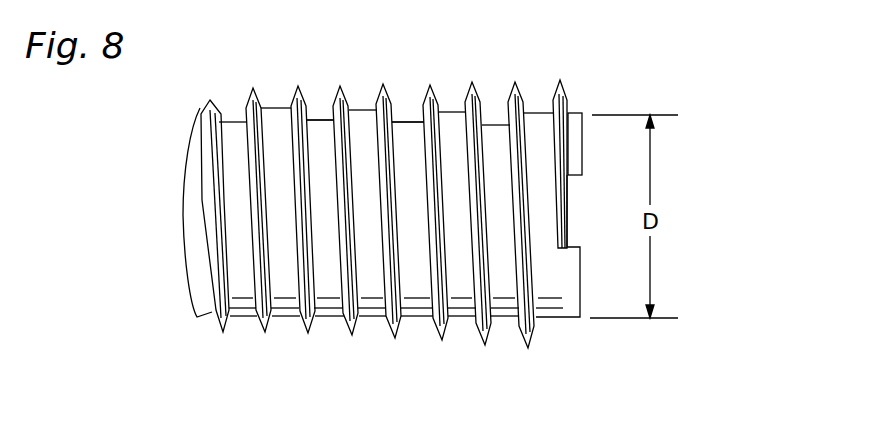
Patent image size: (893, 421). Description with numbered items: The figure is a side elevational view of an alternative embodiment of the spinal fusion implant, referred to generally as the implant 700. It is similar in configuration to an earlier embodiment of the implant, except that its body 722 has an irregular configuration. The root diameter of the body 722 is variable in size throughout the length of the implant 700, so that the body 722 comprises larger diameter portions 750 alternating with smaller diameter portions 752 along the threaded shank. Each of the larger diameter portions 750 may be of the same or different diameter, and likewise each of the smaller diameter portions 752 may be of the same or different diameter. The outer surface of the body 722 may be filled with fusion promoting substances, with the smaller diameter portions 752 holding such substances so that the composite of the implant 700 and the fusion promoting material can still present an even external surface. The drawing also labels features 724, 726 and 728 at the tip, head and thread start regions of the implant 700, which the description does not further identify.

The implant 700 is at (178, 148).
The body 722 is at (418, 277).
The distal tip 724 is at (198, 318).
The head flange 726 is at (583, 133).
The thread start 728 is at (265, 322).
The larger diameter portions 750 is at (278, 96).
The smaller diameter portions 752 is at (409, 108).